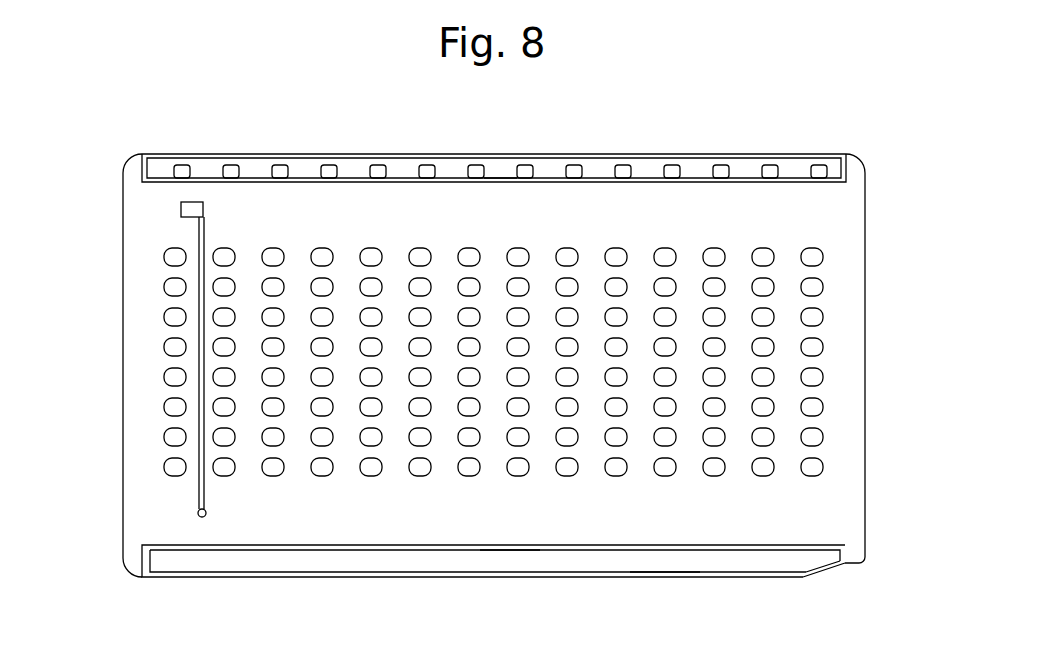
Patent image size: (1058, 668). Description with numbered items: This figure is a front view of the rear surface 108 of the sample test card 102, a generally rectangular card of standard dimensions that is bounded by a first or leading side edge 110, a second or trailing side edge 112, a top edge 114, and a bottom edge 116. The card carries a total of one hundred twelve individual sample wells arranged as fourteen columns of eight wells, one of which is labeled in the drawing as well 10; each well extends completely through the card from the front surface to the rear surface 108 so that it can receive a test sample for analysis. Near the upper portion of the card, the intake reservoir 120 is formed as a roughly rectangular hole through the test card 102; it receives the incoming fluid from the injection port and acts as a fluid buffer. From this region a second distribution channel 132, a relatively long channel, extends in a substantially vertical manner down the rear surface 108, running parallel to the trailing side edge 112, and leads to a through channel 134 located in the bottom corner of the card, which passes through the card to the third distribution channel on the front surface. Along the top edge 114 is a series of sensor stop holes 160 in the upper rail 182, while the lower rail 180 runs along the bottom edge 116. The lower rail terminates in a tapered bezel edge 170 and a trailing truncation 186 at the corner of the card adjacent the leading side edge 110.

The sample test card 102 is at (899, 159).
The first or leading side edge 110 is at (865, 388).
The second or trailing side edge 112 is at (123, 397).
The top edge 114 is at (404, 157).
The bottom edge 116 is at (362, 576).
The intake reservoir 120 is at (183, 210).
The second distribution channel 132 is at (206, 227).
The through channel 134 is at (201, 517).
The sensor stop holes 160 is at (623, 173).
The upper rail 182 is at (503, 172).
The lower rail 180 is at (508, 560).
The second or rear surface 108 is at (663, 515).
The tapered bezel edge 170 is at (840, 565).
The trailing truncation 186 is at (843, 562).
The hole 10 is at (815, 318).